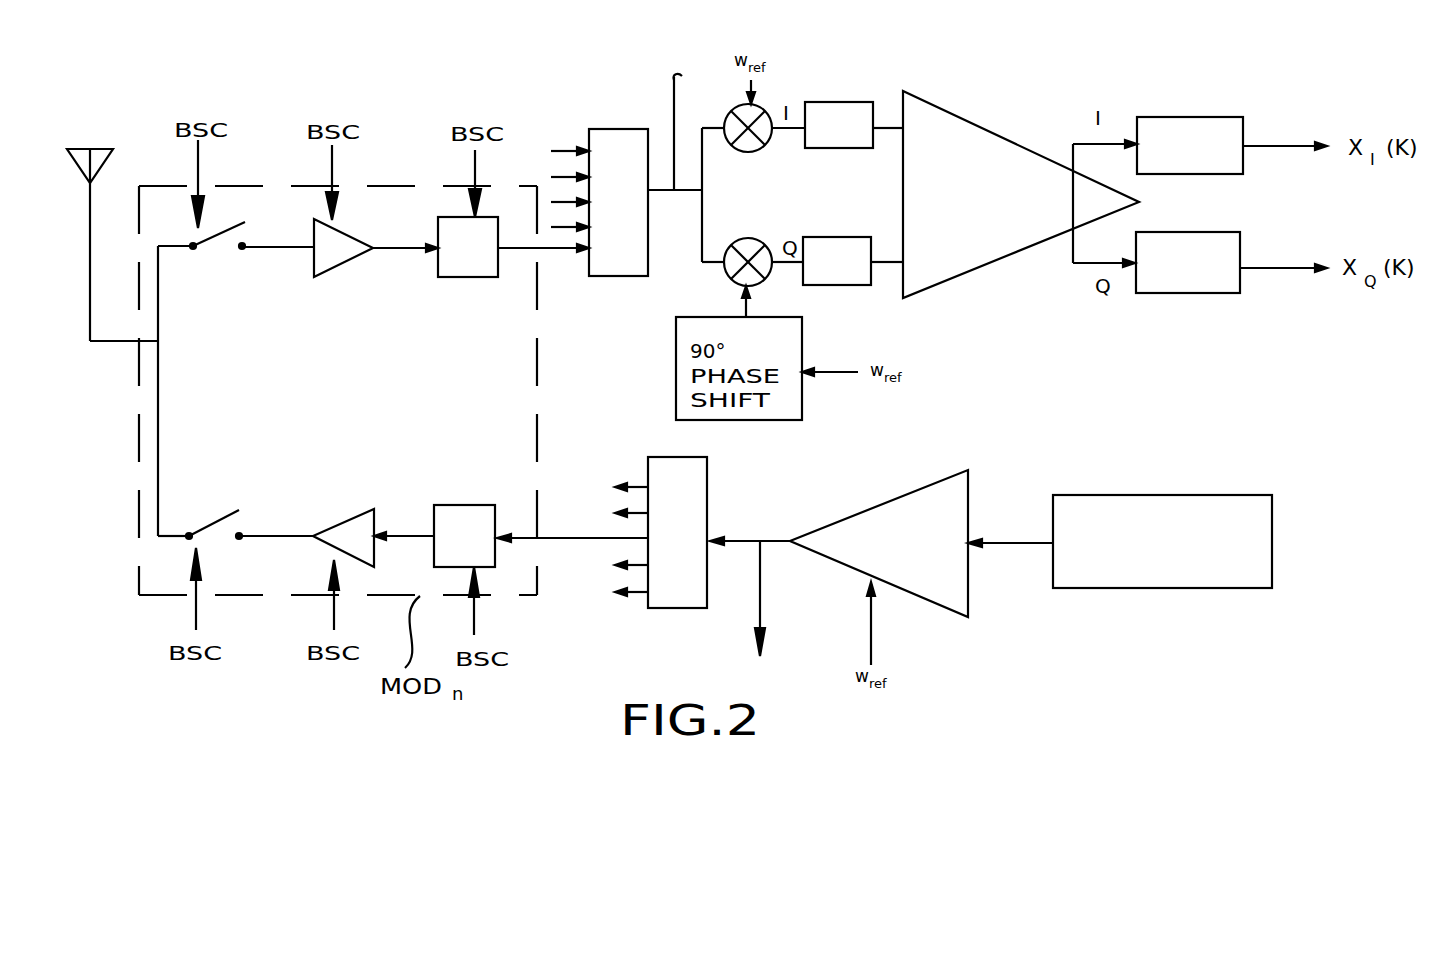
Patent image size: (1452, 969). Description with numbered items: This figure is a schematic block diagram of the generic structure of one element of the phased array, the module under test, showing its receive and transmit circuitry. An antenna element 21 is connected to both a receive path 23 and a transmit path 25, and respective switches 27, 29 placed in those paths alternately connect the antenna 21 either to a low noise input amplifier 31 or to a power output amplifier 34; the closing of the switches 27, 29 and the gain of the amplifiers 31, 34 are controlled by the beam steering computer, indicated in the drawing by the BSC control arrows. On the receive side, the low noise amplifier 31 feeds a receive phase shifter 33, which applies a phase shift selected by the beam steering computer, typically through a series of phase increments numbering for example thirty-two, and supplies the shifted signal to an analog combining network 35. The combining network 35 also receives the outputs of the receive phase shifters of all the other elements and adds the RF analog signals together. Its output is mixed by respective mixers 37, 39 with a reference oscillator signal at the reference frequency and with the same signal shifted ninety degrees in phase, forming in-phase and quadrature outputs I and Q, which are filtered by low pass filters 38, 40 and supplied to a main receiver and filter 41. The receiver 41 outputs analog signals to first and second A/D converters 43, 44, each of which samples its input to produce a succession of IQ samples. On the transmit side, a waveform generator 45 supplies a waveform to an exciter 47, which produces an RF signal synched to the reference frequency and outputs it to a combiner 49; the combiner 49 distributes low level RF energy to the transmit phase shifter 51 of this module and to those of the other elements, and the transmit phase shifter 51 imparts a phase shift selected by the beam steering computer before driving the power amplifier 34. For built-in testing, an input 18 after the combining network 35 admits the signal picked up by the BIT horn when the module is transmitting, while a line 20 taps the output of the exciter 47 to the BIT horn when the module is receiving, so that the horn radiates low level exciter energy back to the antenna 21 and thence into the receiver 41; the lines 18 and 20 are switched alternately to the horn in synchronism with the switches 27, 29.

The input 18 is at (672, 104).
The line 20 is at (762, 585).
The antenna element 21 is at (113, 163).
The receive path 23 is at (176, 252).
The transmit path 25 is at (181, 530).
The switch 27 is at (236, 223).
The switch 29 is at (220, 525).
The low noise input amplifier 31 is at (346, 262).
The receive phase shifter 33 is at (465, 278).
The power output amplifier 34 is at (358, 508).
The analog combining network 35 is at (615, 277).
The mixer 37 is at (752, 153).
The low pass filter 38 is at (830, 102).
The mixer 39 is at (750, 237).
The low pass filter 40 is at (838, 286).
The main receiver and filter 41 is at (998, 128).
The A/D converter 43 is at (1205, 117).
The A/D converter 44 is at (1208, 293).
The waveform generator 45 is at (1098, 494).
The exciter 47 is at (884, 508).
The combiner 49 is at (707, 482).
The transmit phase shifter 51 is at (456, 505).